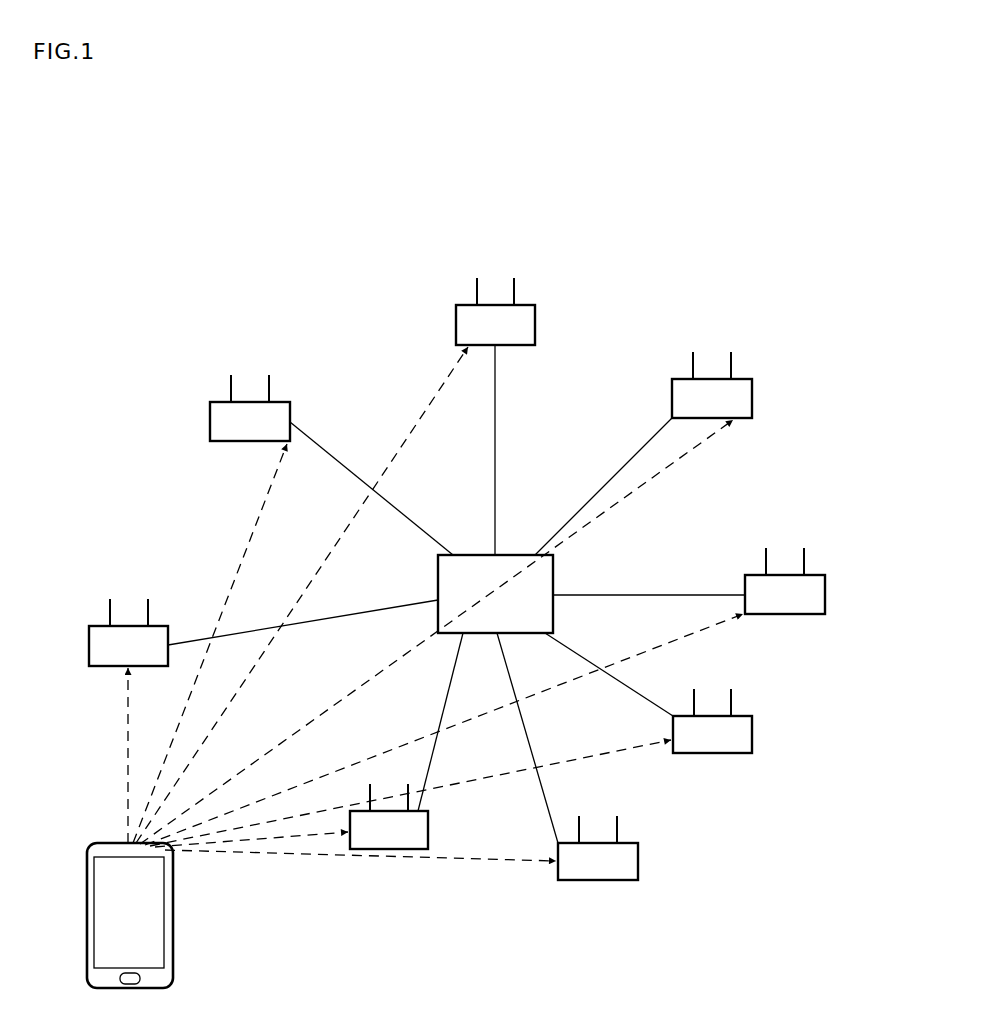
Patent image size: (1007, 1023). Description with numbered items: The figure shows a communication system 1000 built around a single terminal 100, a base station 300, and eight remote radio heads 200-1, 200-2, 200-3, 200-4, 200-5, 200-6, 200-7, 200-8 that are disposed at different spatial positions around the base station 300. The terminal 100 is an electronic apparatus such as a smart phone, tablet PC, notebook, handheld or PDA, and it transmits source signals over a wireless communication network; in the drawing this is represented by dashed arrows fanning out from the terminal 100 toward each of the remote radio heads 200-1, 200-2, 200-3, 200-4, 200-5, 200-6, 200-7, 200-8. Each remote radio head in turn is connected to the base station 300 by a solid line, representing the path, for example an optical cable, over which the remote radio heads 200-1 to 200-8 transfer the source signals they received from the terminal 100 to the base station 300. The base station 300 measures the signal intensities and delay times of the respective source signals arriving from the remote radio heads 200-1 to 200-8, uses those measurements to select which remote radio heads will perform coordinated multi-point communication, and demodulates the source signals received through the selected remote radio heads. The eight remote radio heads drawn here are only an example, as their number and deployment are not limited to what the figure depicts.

The communication system 1000 is at (707, 230).
The terminal 100 is at (173, 939).
The base station 300 is at (512, 555).
The remote radio head 200-1 is at (89, 626).
The remote radio head 200-2 is at (210, 402).
The remote radio head 200-3 is at (456, 305).
The remote radio head 200-4 is at (752, 379).
The remote radio head 200-5 is at (825, 575).
The remote radio head 200-6 is at (752, 733).
The remote radio head 200-7 is at (638, 861).
The remote radio head 200-8 is at (425, 849).